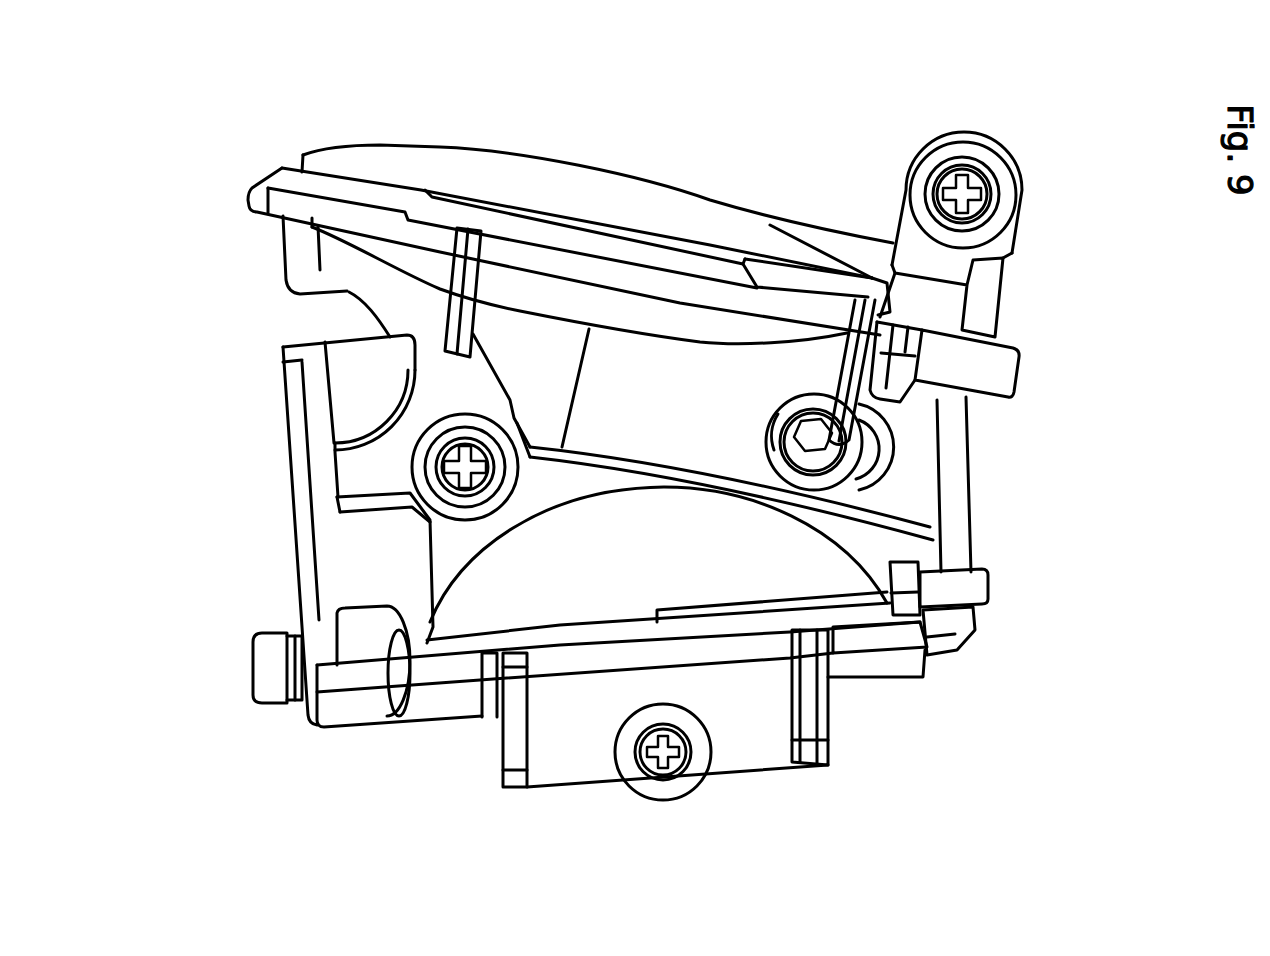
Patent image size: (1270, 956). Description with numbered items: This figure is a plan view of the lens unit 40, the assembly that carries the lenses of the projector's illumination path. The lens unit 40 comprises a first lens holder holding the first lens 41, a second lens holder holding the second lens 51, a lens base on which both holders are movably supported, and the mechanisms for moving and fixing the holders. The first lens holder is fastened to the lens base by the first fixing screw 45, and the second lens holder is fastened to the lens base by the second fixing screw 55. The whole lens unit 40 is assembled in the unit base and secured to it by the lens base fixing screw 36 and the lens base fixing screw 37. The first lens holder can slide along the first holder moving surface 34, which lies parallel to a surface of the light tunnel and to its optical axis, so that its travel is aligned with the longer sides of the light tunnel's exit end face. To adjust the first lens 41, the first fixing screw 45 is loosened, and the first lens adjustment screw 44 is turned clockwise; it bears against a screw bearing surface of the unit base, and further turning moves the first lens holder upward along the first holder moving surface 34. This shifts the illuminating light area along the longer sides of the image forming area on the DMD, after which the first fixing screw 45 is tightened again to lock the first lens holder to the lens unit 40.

The lens unit 40 is at (272, 113).
The second lens 51 is at (604, 168).
The lens base fixing screw 37 is at (975, 177).
The lens base fixing screw 36 is at (425, 460).
The second fixing screw 55 is at (913, 478).
The first holder moving surface 34 is at (365, 570).
The first fixing screw 45 is at (278, 703).
The first lens 41 is at (697, 593).
The first lens adjustment screw 44 is at (677, 767).